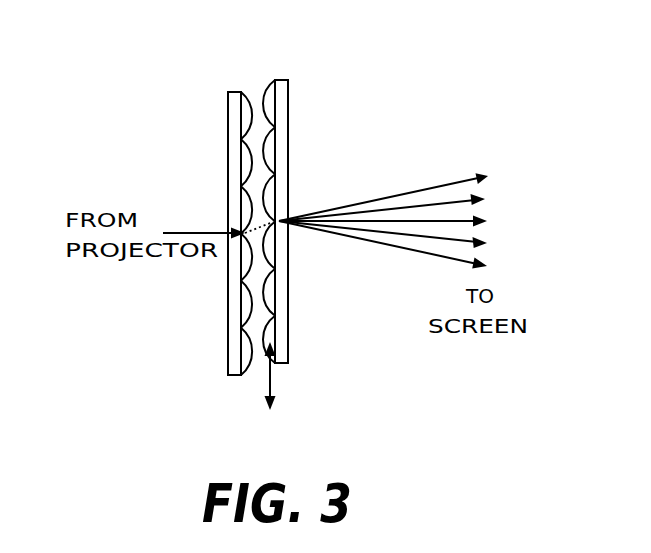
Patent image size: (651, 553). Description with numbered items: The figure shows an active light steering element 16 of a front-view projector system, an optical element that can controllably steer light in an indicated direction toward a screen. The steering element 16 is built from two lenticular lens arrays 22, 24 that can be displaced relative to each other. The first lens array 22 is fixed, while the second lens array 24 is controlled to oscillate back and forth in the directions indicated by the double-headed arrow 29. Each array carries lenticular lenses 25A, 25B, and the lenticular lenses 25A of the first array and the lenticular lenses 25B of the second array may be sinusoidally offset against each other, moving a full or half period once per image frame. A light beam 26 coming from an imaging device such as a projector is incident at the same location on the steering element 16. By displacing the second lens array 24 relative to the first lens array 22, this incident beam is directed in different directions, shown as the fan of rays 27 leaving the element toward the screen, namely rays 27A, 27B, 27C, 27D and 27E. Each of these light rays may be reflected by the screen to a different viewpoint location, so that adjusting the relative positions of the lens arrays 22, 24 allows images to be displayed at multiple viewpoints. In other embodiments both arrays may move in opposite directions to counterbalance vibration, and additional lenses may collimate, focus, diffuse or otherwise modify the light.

The steering element 16 is at (255, 65).
The first lens array 22 is at (193, 233).
The second lens array 24 is at (324, 203).
The lenticular lenses 25A is at (248, 353).
The lenticular lenses 25B is at (273, 157).
The light beam 26 is at (185, 231).
The rays 27 is at (405, 180).
The ray 27A is at (404, 192).
The ray 27B is at (403, 203).
The ray 27C is at (404, 220).
The ray 27D is at (405, 237).
The ray 27E is at (403, 249).
The double-headed arrow 29 is at (272, 383).